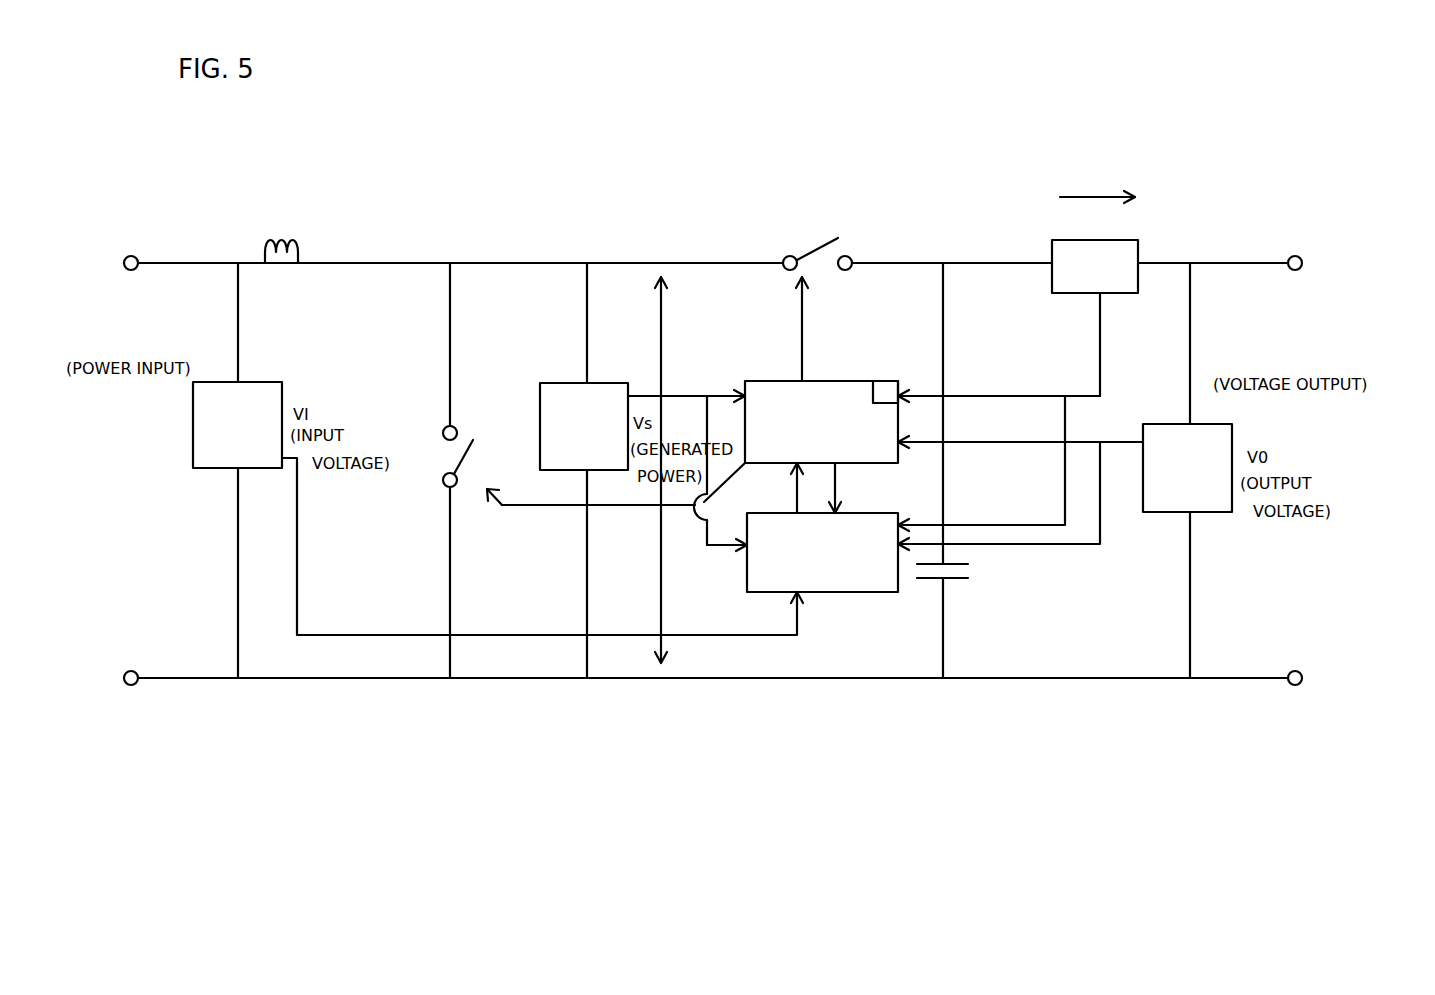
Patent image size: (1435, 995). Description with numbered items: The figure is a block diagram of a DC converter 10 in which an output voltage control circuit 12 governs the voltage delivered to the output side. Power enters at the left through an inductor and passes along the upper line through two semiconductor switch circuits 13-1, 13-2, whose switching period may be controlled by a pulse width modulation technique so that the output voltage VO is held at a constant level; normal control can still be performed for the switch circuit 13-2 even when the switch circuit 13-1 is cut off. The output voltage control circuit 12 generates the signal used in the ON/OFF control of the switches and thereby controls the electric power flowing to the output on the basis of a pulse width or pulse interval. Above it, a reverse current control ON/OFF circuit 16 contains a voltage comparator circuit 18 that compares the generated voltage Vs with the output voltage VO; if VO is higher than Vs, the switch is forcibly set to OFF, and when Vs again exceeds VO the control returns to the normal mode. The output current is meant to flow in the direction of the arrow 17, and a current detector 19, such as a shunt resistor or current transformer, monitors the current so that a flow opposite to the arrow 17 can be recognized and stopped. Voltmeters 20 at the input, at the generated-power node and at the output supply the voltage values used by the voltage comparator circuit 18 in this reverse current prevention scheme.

The DC converter 10 is at (598, 240).
The output voltage control circuit 12 is at (890, 592).
The switch circuit 13-1 is at (849, 246).
The switch circuit 13-2 is at (443, 473).
The reverse current control ON/OFF circuit 16 is at (898, 462).
The arrow 17 is at (1093, 193).
The voltage comparator circuit 18 is at (890, 385).
The current detector 19 is at (1131, 276).
The voltmeter 20 is at (205, 470).